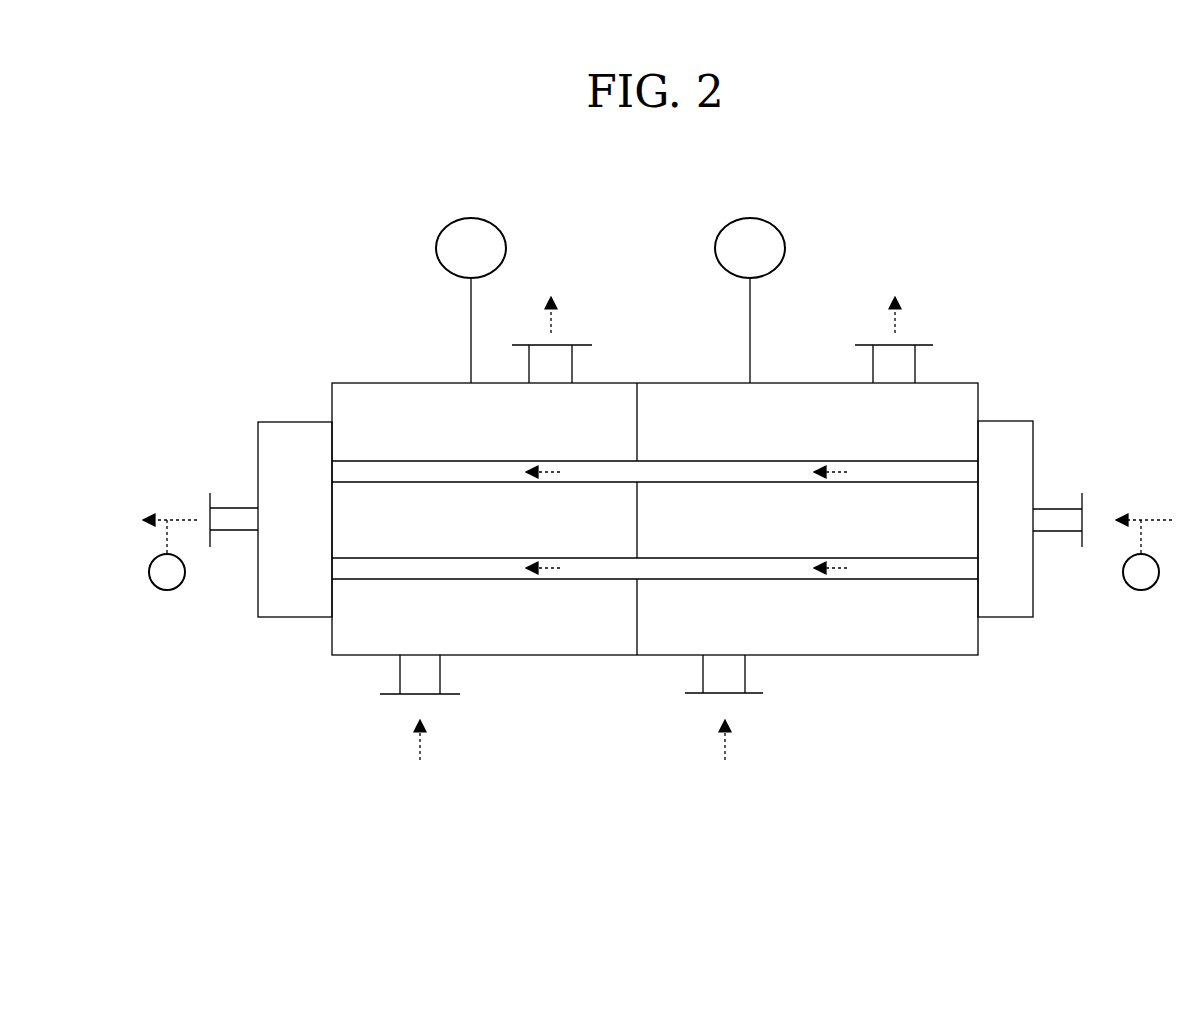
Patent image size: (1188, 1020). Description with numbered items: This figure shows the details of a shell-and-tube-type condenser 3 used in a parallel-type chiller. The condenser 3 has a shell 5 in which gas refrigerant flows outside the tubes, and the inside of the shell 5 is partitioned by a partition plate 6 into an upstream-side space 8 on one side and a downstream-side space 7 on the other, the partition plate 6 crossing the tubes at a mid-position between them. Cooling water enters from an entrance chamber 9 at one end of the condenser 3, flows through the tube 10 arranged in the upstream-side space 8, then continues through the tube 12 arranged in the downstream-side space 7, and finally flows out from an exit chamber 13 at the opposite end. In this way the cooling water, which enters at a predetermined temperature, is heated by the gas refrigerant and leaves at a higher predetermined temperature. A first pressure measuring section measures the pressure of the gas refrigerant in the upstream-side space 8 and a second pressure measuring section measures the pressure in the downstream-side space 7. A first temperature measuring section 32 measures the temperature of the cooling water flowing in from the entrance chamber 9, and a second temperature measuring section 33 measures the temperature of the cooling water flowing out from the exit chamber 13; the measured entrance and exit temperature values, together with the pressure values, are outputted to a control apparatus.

The condenser 3 is at (283, 352).
The shell 5 is at (898, 657).
The partition plate 6 is at (639, 418).
The downstream-side space 7 is at (393, 397).
The upstream-side space 8 is at (953, 395).
The entrance chamber 9 is at (1006, 420).
The tube 10 is at (857, 460).
The tube 12 is at (438, 460).
The exit chamber 13 is at (258, 440).
The first temperature measuring section 32 is at (1141, 590).
The second temperature measuring section 33 is at (167, 590).